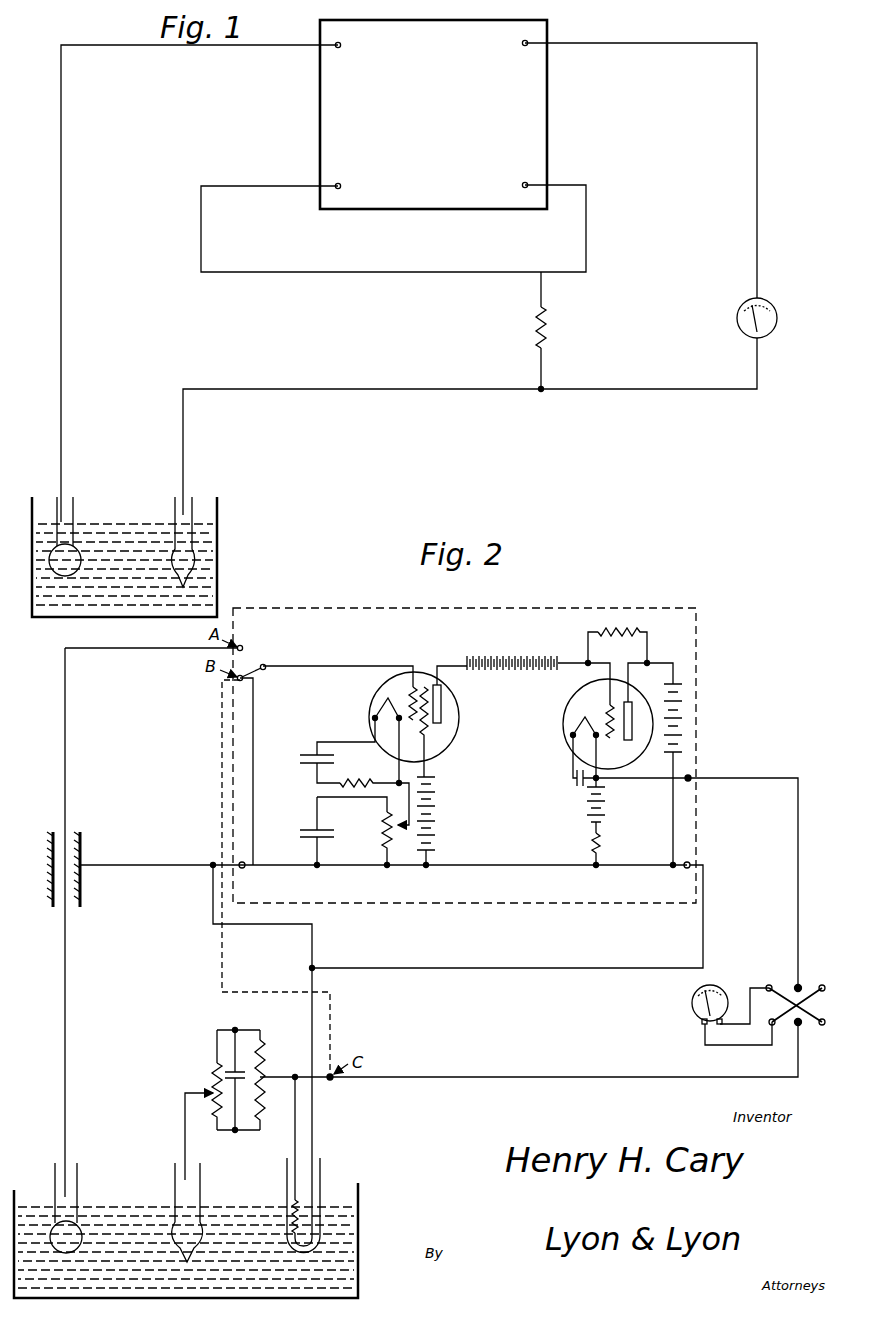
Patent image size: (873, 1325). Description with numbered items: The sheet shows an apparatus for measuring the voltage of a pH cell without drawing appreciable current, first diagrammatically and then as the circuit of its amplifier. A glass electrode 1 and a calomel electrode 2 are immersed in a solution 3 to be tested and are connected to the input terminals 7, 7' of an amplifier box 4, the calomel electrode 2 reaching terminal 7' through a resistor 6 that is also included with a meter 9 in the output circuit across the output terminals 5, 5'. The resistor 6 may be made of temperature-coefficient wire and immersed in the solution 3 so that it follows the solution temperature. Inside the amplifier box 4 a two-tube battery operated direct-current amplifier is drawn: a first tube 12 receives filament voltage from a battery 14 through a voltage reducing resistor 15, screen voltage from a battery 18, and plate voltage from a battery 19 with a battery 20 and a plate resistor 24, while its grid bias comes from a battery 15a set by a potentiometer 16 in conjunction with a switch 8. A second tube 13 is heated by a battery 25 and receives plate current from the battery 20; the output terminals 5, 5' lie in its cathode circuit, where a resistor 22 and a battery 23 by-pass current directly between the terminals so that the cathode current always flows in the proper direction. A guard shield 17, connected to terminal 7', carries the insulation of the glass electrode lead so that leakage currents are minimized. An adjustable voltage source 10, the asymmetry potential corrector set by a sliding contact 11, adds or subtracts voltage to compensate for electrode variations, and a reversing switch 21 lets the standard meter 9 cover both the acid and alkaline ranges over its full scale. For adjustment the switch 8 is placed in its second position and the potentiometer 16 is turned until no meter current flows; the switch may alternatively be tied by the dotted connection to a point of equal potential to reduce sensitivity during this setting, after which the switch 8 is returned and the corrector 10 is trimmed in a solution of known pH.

In FIG. 1, the glass electrode 1 is at (76, 520).
In FIG. 2, the glass electrode 1 is at (75, 1198).
In FIG. 1, the calomel electrode 2 is at (177, 500).
In FIG. 2, the calomel electrode 2 is at (201, 1185).
In FIG. 1, the solution 3 is at (209, 539).
In FIG. 2, the solution 3 is at (120, 1222).
In FIG. 1, the amplifier box 4 is at (437, 190).
In FIG. 2, the amplifier box 4 is at (405, 606).
In FIG. 1, the output terminal 5 is at (639, 169).
In FIG. 2, the output terminal 5 is at (690, 864).
In FIG. 1, the output terminal 5' is at (550, 167).
In FIG. 2, the output terminal 5' is at (523, 904).
In FIG. 1, the resistor 6 is at (548, 318).
In FIG. 2, the resistor 6 is at (296, 1208).
In FIG. 1, the input terminal 7 is at (201, 282).
In FIG. 2, the input terminal 7 is at (159, 633).
In FIG. 1, the input terminal 7' is at (393, 212).
In FIG. 2, the input terminal 7' is at (383, 879).
In FIG. 2, the switch 8 is at (273, 648).
In FIG. 1, the meter 9 is at (779, 316).
In FIG. 2, the meter 9 is at (692, 1005).
In FIG. 2, the adjustable voltage source 10 is at (214, 1048).
In FIG. 2, the sliding contact 11 is at (200, 1092).
In FIG. 2, the tube 12 is at (458, 737).
In FIG. 2, the tube 13 is at (563, 730).
In FIG. 2, the battery 14 is at (308, 756).
In FIG. 2, the voltage reducing resistor 15 is at (362, 777).
In FIG. 2, the battery 15a is at (312, 830).
In FIG. 2, the potentiometer 16 is at (378, 830).
In FIG. 2, the guard shield 17 is at (47, 862).
In FIG. 2, the battery 18 is at (436, 815).
In FIG. 2, the battery 19 is at (516, 660).
In FIG. 2, the battery 20 is at (684, 701).
In FIG. 2, the reversing switch 21 is at (808, 992).
In FIG. 2, the resistor 22 is at (604, 849).
In FIG. 2, the battery 23 is at (606, 803).
In FIG. 2, the plate resistor 24 is at (634, 630).
In FIG. 2, the battery 25 is at (575, 785).